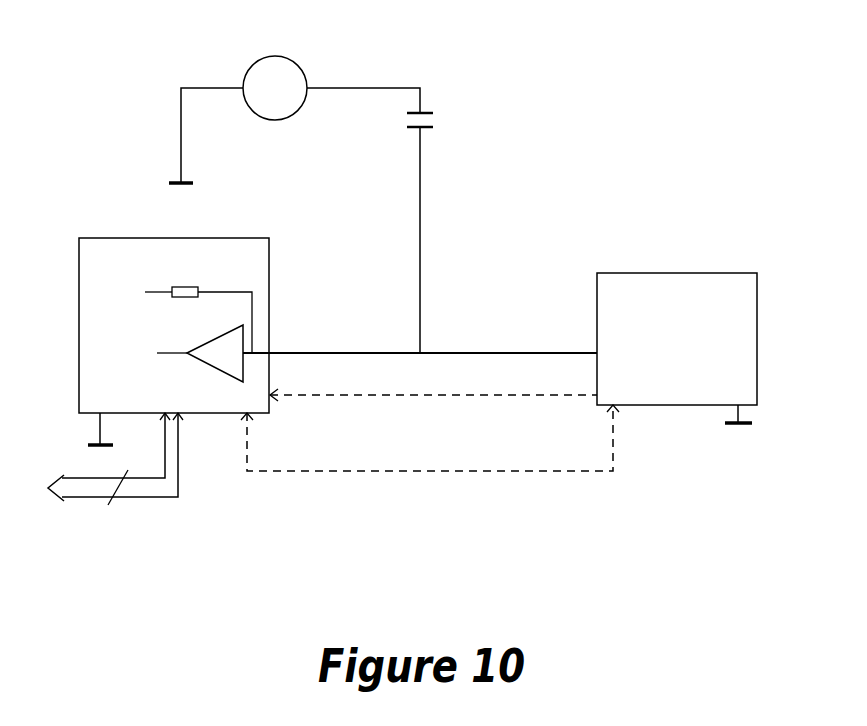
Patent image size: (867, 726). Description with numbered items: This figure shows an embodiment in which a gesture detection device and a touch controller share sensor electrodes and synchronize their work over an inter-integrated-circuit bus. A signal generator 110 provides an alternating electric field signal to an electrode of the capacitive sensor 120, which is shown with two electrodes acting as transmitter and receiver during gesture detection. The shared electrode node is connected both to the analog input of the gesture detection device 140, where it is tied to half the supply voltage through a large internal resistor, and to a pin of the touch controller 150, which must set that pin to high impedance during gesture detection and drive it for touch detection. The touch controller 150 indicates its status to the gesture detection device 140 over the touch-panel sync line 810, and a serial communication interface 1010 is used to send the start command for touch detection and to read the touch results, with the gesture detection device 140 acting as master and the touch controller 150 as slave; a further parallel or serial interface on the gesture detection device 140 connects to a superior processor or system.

The signal generator 110 is at (275, 120).
The capacitive sensor 120 is at (433, 120).
The gesture detection device 140 is at (322, 371).
The touch controller 150 is at (677, 361).
The TP_sync line 810 is at (502, 395).
The I2C interface 1010 is at (458, 470).